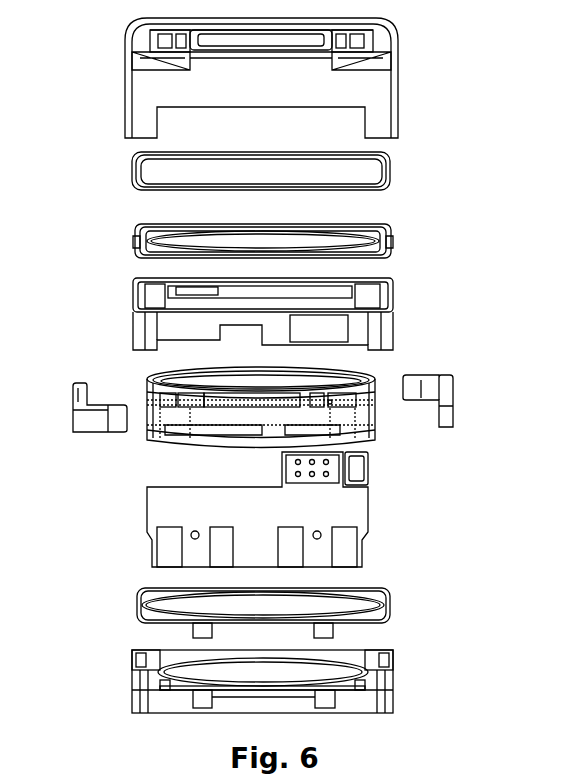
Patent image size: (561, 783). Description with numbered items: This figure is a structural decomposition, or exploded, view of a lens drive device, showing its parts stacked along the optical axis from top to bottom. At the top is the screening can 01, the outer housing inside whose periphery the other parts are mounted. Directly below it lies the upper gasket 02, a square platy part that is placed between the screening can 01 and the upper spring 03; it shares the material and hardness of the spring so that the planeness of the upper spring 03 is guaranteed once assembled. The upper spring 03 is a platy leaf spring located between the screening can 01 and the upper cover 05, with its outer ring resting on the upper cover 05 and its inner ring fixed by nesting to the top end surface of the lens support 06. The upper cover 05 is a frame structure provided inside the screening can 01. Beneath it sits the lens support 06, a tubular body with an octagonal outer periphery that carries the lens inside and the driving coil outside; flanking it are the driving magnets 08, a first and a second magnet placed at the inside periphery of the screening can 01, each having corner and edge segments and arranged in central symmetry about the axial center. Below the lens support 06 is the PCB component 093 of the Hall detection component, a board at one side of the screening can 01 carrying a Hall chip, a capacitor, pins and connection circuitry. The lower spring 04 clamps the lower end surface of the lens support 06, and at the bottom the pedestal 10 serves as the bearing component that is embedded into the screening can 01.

The screening can 01 is at (178, 86).
The upper gasket 02 is at (135, 172).
The upper spring 03 is at (140, 247).
The upper cover 05 is at (148, 328).
The driving magnets 08 is at (98, 419).
The lens support 06 is at (283, 438).
The PCB component 093 is at (338, 515).
The lower spring 04 is at (378, 612).
The pedestal 10 is at (358, 702).